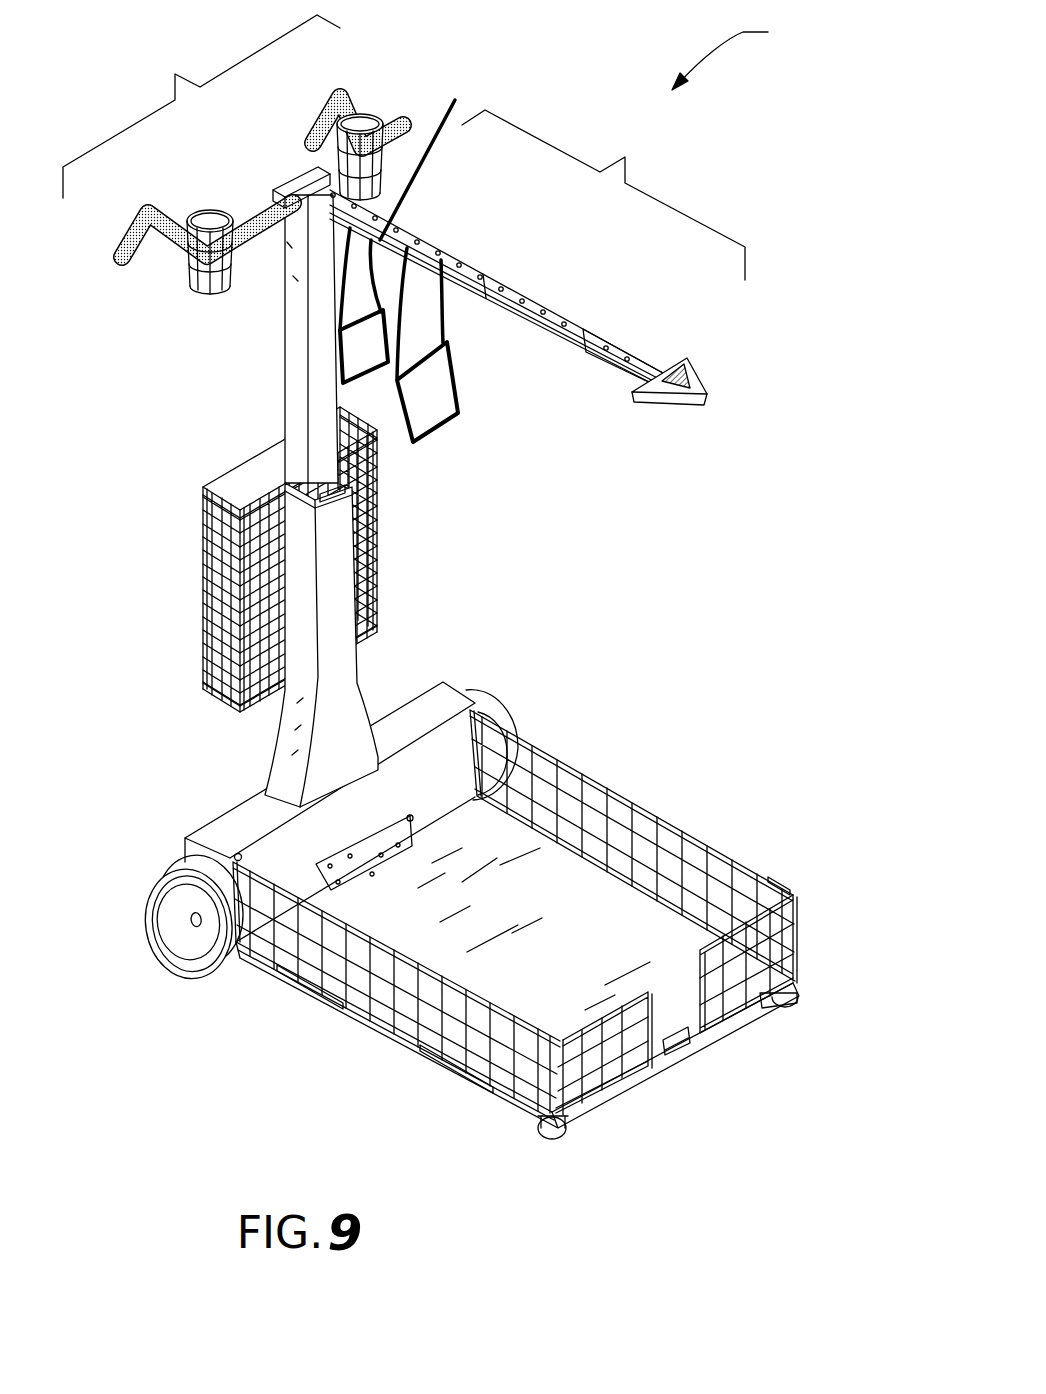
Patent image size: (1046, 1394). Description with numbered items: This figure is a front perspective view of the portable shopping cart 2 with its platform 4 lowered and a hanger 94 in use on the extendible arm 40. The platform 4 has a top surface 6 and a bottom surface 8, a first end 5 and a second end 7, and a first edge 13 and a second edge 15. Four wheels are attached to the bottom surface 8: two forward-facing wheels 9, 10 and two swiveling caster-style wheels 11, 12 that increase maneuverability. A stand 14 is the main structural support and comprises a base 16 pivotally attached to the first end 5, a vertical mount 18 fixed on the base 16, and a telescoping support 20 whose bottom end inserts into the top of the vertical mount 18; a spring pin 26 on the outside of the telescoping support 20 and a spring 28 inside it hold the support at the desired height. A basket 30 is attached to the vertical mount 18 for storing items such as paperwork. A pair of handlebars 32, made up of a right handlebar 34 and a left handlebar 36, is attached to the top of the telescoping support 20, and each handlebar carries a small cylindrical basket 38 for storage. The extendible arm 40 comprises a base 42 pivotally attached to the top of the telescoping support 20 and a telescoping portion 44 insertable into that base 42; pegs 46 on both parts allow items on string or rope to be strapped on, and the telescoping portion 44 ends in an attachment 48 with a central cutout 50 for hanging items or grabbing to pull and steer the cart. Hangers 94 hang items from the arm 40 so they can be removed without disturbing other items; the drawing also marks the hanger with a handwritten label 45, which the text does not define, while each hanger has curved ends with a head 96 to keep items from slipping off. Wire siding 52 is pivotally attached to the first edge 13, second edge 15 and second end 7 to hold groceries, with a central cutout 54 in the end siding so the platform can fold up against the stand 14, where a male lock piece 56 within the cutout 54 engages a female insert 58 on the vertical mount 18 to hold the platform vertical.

The portable shopping cart 2 is at (733, 50).
The platform 4 is at (607, 907).
The first end 5 is at (457, 793).
The top surface 6 is at (562, 867).
The second end 7 is at (750, 1020).
The bottom surface 8 is at (613, 1100).
The wheel 9 is at (150, 930).
The wheel 10 is at (481, 703).
The caster-style wheel 11 is at (551, 1140).
The caster-style wheel 12 is at (773, 1013).
The first edge 13 is at (377, 1025).
The stand 14 is at (283, 710).
The second edge 15 is at (717, 913).
The base 16 is at (230, 827).
The vertical mount 18 is at (250, 570).
The telescoping support 20 is at (283, 338).
The spring pin 26 is at (423, 519).
The spring 28 is at (345, 567).
The basket 30 is at (285, 559).
The pair of handlebars 32 is at (201, 106).
The right handlebar 34 is at (148, 260).
The left handlebar 36 is at (405, 125).
The cylindrical basket 38 is at (205, 208).
The extendible arm 40 is at (603, 195).
The base 42 is at (292, 181).
The telescoping portion 44 is at (604, 338).
The cord 45 is at (439, 153).
The pegs 46 is at (605, 335).
The attachment 48 is at (705, 381).
The central cutout 50 is at (665, 398).
The wire siding 52 is at (317, 973).
The cutout 54 is at (675, 1090).
The male lock piece 56 is at (683, 1042).
The female insert 58 is at (346, 493).
The hanger 94 is at (367, 263).
The head 96 is at (377, 240).